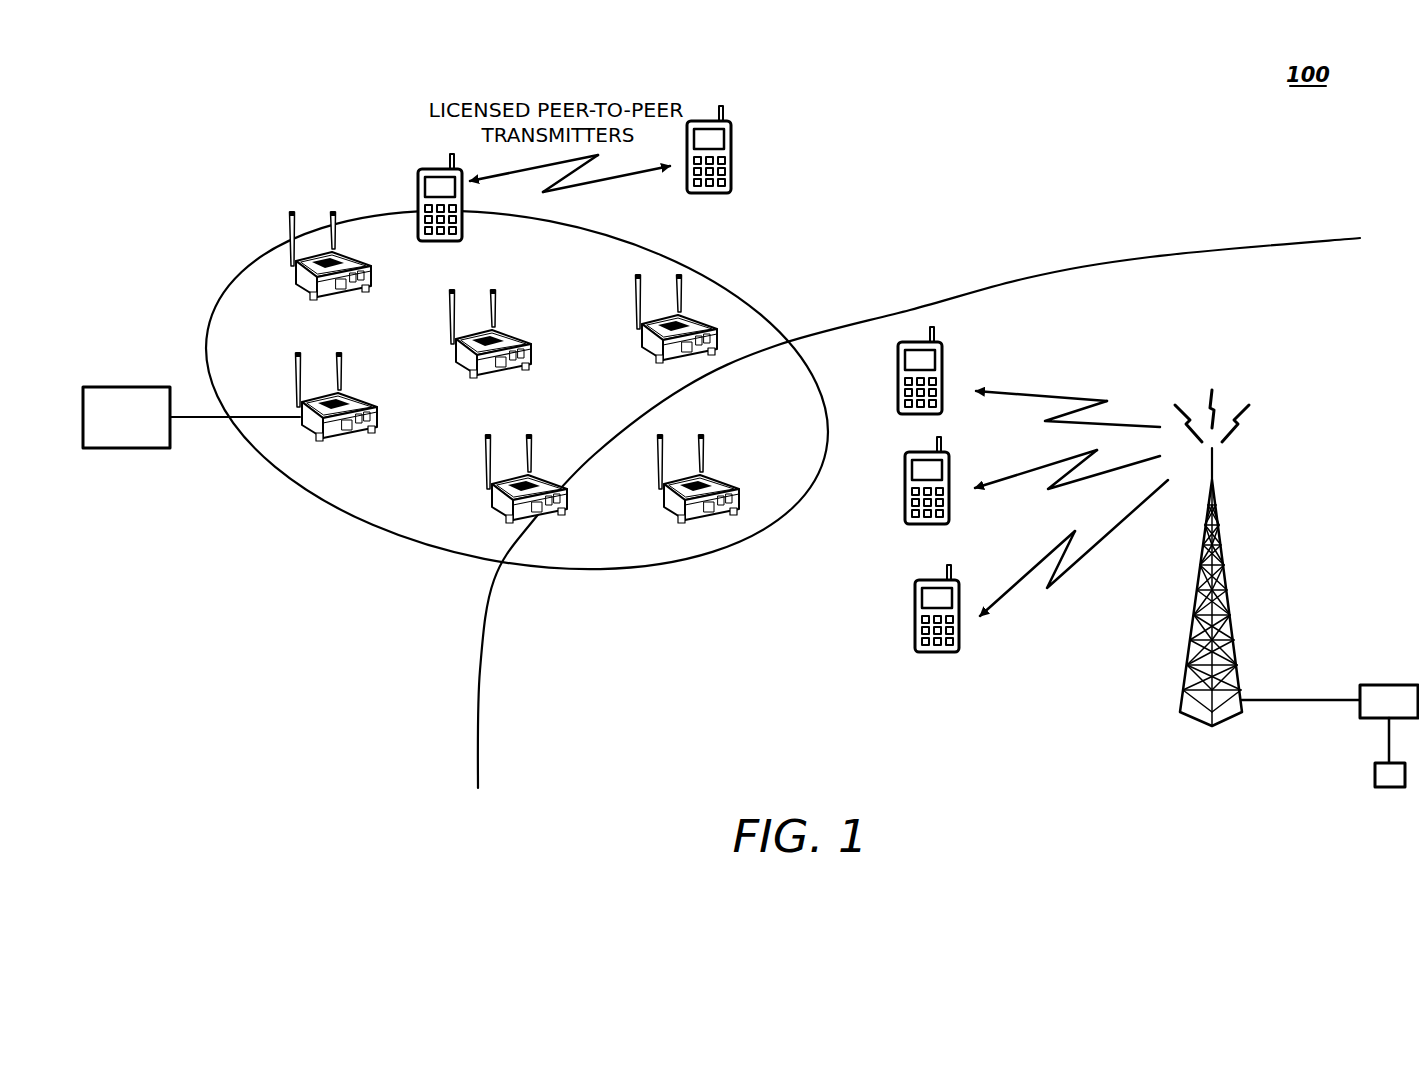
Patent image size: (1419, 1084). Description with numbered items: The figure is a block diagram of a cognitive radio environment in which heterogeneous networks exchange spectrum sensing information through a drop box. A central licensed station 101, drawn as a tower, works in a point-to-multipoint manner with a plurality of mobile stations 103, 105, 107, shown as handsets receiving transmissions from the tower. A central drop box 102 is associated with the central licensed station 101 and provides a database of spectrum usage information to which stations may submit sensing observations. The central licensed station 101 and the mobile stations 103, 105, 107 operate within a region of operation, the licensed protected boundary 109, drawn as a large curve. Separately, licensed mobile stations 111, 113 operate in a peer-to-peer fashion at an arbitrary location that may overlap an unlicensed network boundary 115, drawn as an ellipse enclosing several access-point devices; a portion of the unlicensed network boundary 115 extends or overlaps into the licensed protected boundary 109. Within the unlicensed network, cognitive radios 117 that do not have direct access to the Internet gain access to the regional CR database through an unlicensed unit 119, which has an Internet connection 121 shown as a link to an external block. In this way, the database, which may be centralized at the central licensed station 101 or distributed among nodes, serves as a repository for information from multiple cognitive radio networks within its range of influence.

The central licensed station 101 is at (1389, 685).
The central drop box 102 is at (1389, 788).
The mobile station 103 is at (898, 378).
The mobile station 105 is at (905, 490).
The mobile station 107 is at (915, 618).
The licensed protected boundary 109 is at (1071, 268).
The licensed mobile station 111 is at (418, 188).
The licensed mobile station 113 is at (733, 163).
The unlicensed network boundary 115 is at (247, 255).
The cognitive radio 117 is at (637, 350).
The unlicensed unit 119 is at (380, 417).
The Internet connection 121 is at (205, 418).